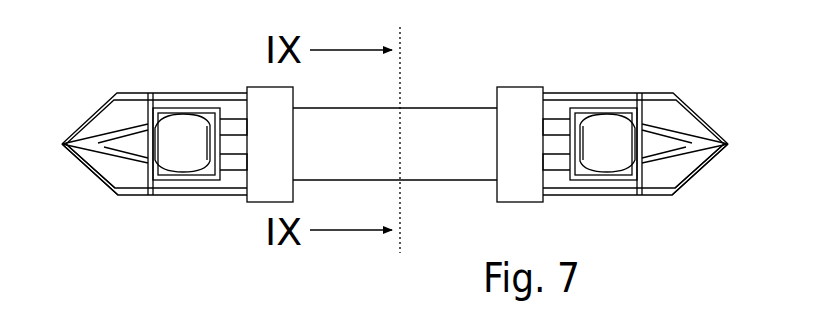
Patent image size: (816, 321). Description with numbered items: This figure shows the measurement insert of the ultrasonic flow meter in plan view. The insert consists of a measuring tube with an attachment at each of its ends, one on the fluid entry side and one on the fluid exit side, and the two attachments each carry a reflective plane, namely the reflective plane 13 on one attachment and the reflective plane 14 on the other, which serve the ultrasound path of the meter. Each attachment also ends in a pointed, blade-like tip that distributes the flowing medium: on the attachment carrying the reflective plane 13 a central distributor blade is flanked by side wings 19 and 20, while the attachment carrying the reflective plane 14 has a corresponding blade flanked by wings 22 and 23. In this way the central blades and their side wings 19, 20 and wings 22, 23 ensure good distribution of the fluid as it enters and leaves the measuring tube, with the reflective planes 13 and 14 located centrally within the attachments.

The reflective plane 13 is at (597, 138).
The reflective plane 14 is at (173, 142).
The side wing 19 is at (662, 177).
The side wing 20 is at (673, 112).
The wing 22 is at (112, 175).
The wing 23 is at (112, 115).